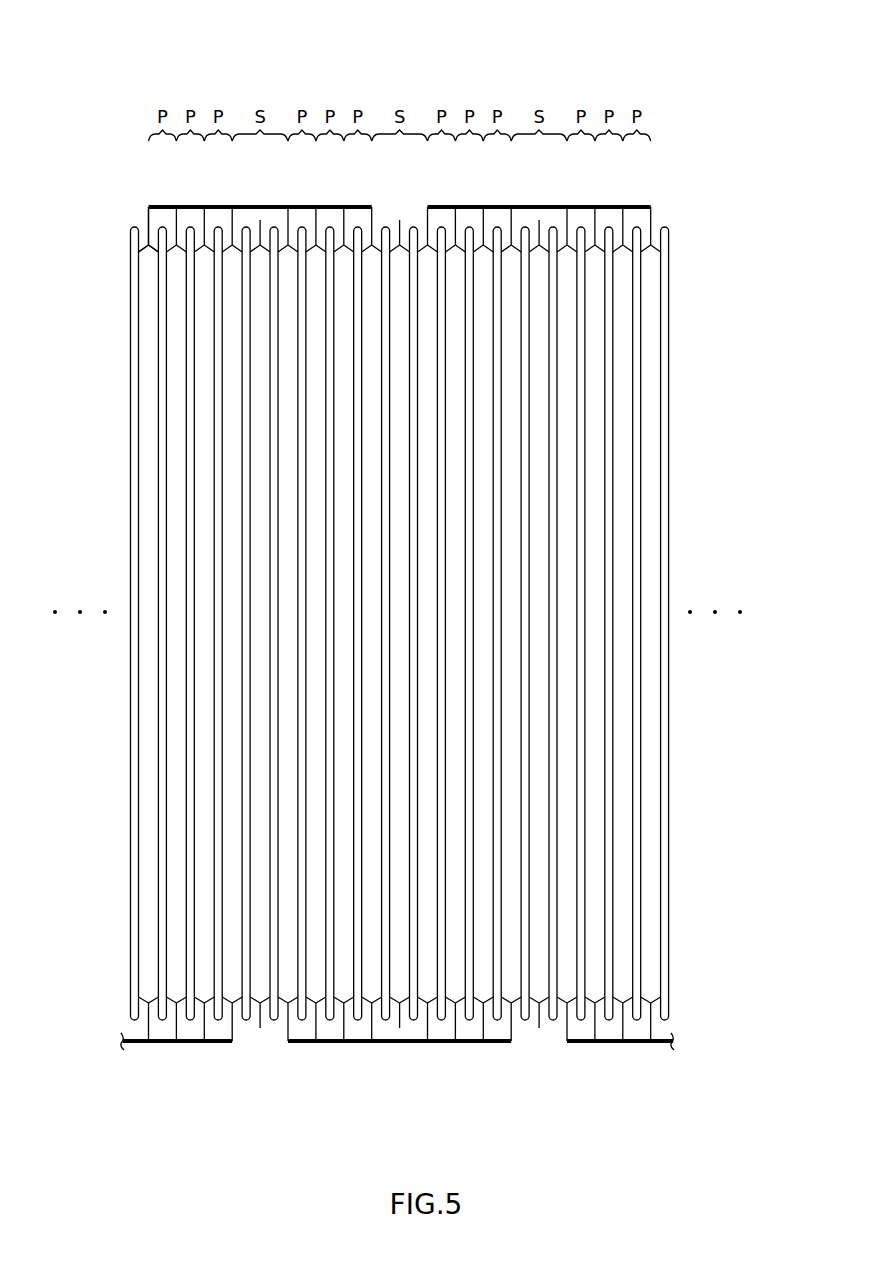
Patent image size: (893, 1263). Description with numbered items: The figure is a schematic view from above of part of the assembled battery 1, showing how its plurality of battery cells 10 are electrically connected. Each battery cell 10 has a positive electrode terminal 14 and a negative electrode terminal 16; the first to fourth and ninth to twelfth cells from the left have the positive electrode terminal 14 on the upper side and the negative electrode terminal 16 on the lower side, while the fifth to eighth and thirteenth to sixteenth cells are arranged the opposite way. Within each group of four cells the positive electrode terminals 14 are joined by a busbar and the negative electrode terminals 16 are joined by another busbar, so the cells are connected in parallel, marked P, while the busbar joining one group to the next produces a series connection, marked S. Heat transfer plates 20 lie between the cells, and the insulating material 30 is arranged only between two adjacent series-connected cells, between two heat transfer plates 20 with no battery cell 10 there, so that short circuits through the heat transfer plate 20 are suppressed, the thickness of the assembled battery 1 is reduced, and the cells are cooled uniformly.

The assembled battery 1 is at (580, 69).
The battery cell 10 is at (148, 486).
The positive electrode terminal 14 is at (400, 625).
The negative electrode terminal 16 is at (400, 625).
The heat transfer plate 20 is at (131, 545).
The insulating material 30 is at (260, 665).